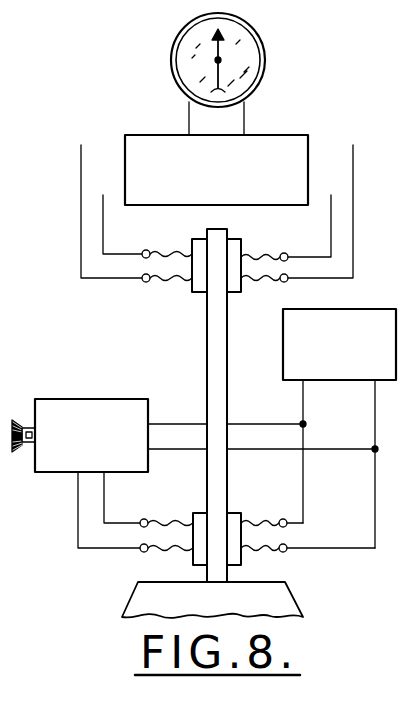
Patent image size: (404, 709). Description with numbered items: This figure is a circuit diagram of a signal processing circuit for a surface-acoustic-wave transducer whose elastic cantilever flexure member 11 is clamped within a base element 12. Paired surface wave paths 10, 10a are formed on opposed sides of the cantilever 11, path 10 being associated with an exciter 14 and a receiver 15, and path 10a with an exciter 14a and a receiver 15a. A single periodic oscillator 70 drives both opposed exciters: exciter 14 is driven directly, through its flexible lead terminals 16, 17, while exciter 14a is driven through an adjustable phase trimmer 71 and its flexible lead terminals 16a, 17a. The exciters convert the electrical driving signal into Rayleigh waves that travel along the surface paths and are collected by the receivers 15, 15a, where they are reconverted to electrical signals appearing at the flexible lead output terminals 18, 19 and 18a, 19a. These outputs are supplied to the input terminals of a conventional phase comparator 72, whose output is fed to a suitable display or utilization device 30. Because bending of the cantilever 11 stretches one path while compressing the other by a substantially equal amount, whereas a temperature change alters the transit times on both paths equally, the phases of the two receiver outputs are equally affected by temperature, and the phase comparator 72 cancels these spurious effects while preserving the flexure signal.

The display device 30 is at (263, 52).
The phase comparator 72 is at (280, 135).
The cantilever flexure member 11 is at (216, 342).
The surface wave path 10a is at (207, 394).
The surface wave path 10 is at (227, 418).
The receiver 15a is at (196, 293).
The receiver 15 is at (236, 293).
The flexible lead output terminal 19a is at (144, 250).
The flexible lead output terminal 19 is at (285, 253).
The flexible lead output terminal 18a is at (145, 282).
The flexible lead output terminal 18 is at (288, 281).
The periodic oscillator 70 is at (334, 381).
The adjustable phase trimmer 71 is at (88, 399).
The exciter 14a is at (197, 512).
The exciter 14 is at (236, 512).
The flexible lead terminal 17a is at (144, 519).
The flexible lead terminal 17 is at (283, 519).
The flexible lead terminal 16a is at (140, 551).
The flexible lead terminal 16 is at (287, 552).
The base element 12 is at (148, 580).